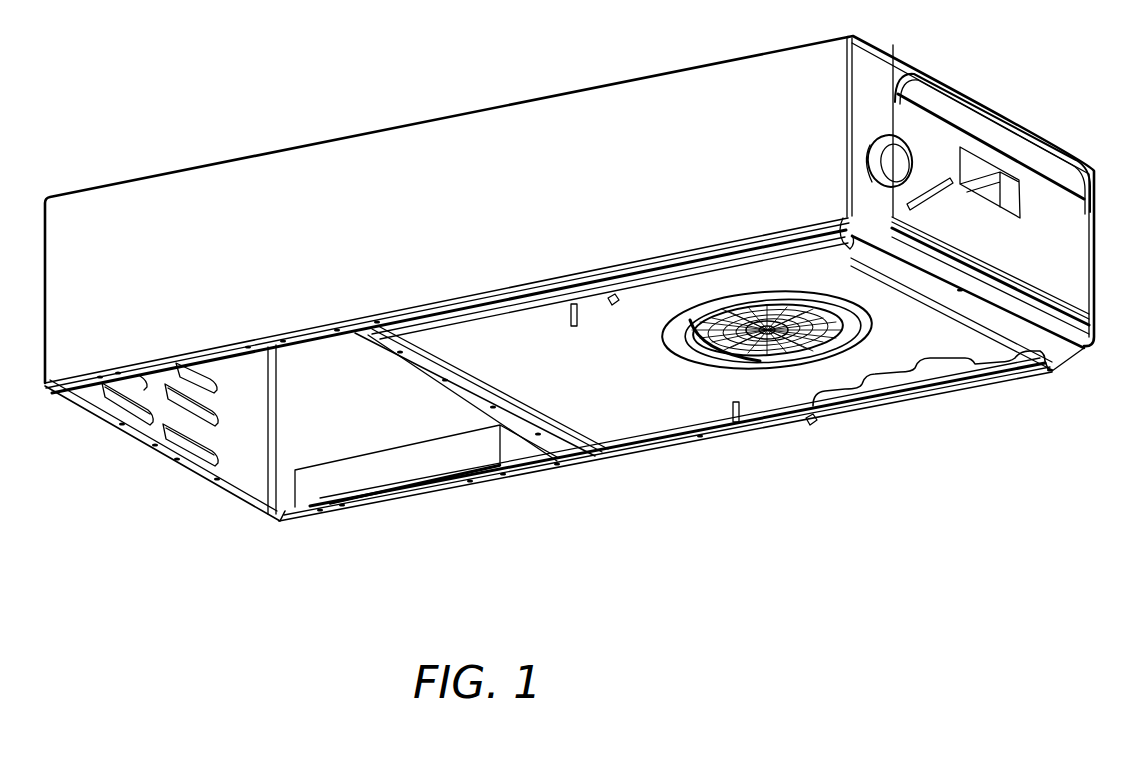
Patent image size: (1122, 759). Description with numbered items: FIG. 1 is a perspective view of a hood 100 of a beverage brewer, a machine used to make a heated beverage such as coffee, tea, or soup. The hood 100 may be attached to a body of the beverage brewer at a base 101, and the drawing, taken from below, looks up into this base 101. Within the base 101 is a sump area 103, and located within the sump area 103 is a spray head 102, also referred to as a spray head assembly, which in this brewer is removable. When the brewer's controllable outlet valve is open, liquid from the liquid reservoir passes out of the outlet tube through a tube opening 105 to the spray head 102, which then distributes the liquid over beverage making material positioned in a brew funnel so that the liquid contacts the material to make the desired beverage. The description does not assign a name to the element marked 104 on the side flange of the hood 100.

The hood 100 is at (271, 152).
The base 101 is at (583, 400).
The spray head 102 is at (855, 323).
The sump area 103 is at (662, 331).
The side flange 104 is at (243, 492).
The tube opening 105 is at (767, 333).